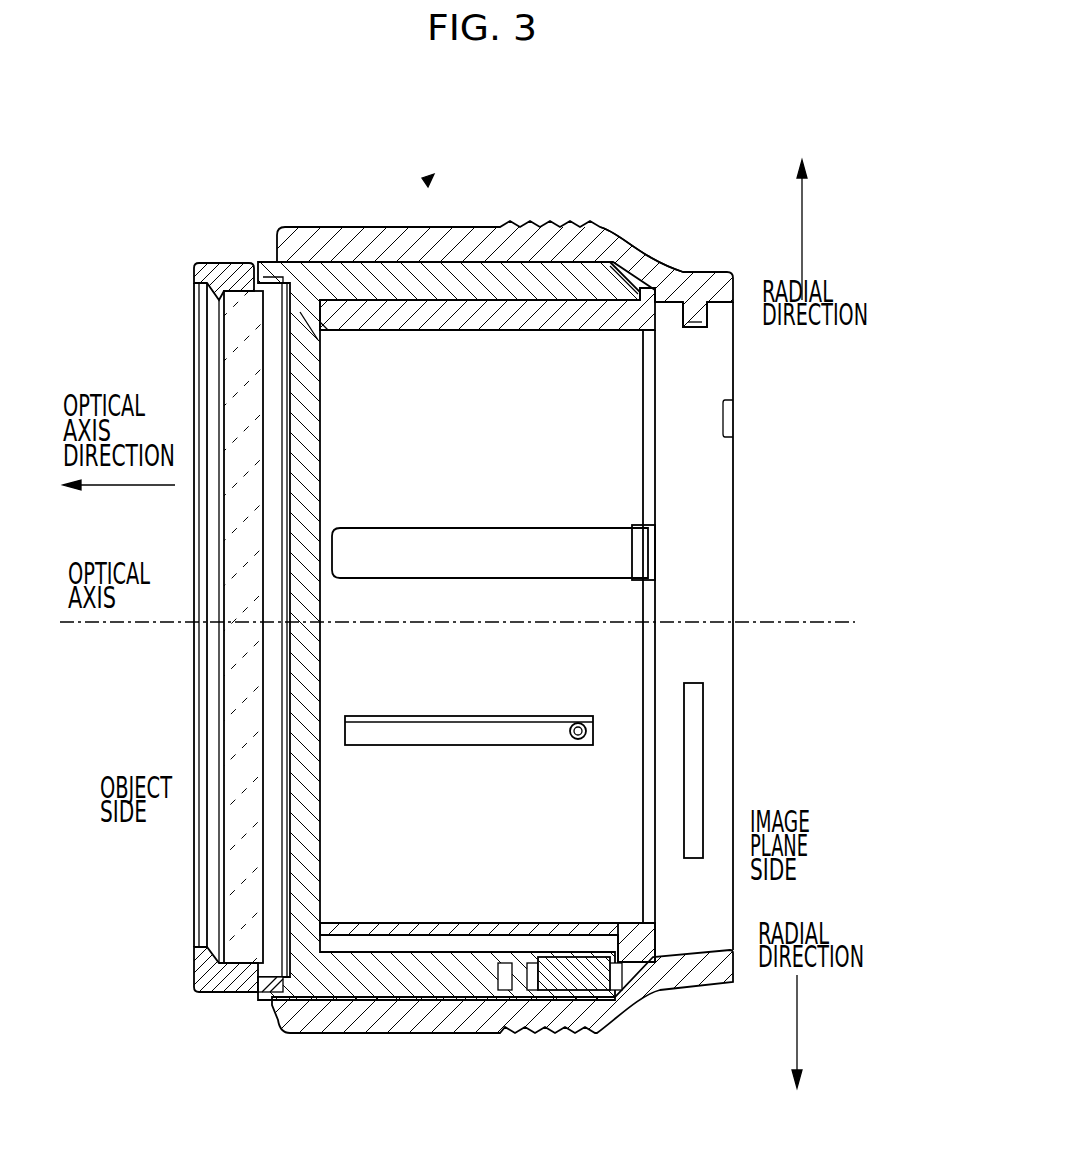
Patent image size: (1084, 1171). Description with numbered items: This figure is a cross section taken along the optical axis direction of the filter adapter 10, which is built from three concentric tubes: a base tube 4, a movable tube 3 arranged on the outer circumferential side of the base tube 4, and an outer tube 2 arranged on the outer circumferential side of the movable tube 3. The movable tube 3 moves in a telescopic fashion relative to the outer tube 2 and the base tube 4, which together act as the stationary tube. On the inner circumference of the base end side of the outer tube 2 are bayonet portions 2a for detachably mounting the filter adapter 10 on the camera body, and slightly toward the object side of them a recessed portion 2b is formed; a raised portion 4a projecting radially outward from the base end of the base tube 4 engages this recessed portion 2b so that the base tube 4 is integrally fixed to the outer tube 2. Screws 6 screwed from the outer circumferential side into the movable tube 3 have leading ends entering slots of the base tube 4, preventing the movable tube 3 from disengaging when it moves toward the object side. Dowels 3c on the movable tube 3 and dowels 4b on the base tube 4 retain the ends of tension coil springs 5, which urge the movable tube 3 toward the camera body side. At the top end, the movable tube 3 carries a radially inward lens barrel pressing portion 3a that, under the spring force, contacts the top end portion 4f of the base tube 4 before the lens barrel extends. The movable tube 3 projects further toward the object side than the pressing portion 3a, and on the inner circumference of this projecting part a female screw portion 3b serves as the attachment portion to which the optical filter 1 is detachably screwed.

The optical filter 1 is at (245, 263).
The filter adapter 10 is at (428, 185).
The outer tube 2 is at (350, 228).
The bayonet portions 2a is at (700, 327).
The recessed portion 2b is at (663, 286).
The movable tube 3 is at (462, 268).
The lens barrel pressing portion 3a is at (318, 362).
The female screw portion 3b is at (270, 993).
The dowels 3c is at (508, 1001).
The base tube 4 is at (570, 320).
The raised portion 4a is at (655, 305).
The dowels 4b is at (625, 975).
The top end portion 4f is at (322, 333).
The tension coil springs 5 is at (597, 990).
The screws 6 is at (585, 746).